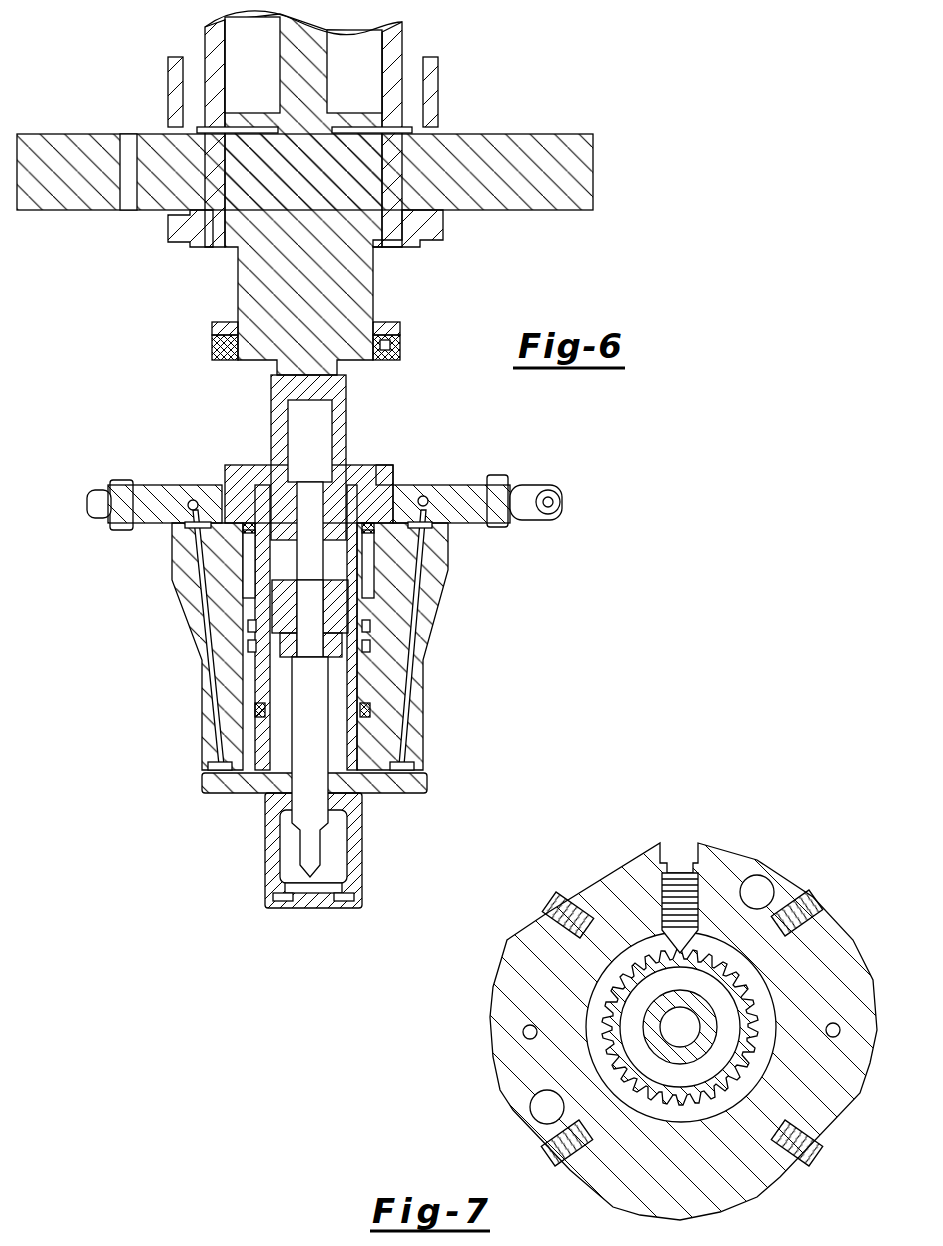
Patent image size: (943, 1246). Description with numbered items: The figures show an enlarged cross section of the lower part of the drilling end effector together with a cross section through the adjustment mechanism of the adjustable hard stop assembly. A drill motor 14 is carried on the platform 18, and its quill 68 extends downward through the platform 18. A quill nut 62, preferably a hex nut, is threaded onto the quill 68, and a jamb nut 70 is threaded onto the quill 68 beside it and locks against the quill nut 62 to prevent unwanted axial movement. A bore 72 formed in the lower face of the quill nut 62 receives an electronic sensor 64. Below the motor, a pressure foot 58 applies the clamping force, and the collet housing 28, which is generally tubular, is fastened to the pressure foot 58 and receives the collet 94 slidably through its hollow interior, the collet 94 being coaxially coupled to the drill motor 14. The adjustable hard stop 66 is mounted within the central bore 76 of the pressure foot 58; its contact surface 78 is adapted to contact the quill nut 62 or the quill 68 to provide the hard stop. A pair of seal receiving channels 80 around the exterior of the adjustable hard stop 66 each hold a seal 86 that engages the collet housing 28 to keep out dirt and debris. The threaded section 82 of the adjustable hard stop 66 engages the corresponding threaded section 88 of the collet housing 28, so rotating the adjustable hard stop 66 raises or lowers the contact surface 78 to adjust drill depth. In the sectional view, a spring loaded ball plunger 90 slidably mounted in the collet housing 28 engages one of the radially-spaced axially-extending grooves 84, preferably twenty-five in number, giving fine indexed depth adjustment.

In FIG. 6, the drill motor 14 is at (402, 68).
In FIG. 6, the platform 18 is at (593, 170).
In FIG. 6, the collet housing 28 is at (198, 665).
In FIG. 7, the collet housing 28 is at (752, 845).
In FIG. 6, the pressure foot 58 is at (152, 485).
In FIG. 6, the quill nut 62 is at (212, 348).
In FIG. 6, the electronic sensor 64 is at (385, 360).
In FIG. 6, the adjustable hard stop 66 is at (415, 467).
In FIG. 7, the adjustable hard stop 66 is at (598, 1015).
In FIG. 6, the quill 68 is at (238, 298).
In FIG. 6, the jamb nut 70 is at (392, 322).
In FIG. 6, the bore 72 is at (395, 356).
In FIG. 6, the central bore 76 is at (225, 485).
In FIG. 6, the contact surface 78 is at (383, 467).
In FIG. 6, the seal receiving channels 80 is at (372, 527).
In FIG. 6, the threaded section 82 is at (250, 645).
In FIG. 7, the radially-spaced axially-extending grooves 84 is at (735, 995).
In FIG. 6, the seal 86 is at (245, 527).
In FIG. 6, the threaded section 88 is at (368, 610).
In FIG. 7, the spring loaded ball plunger 90 is at (680, 860).
In FIG. 6, the collet 94 is at (271, 420).